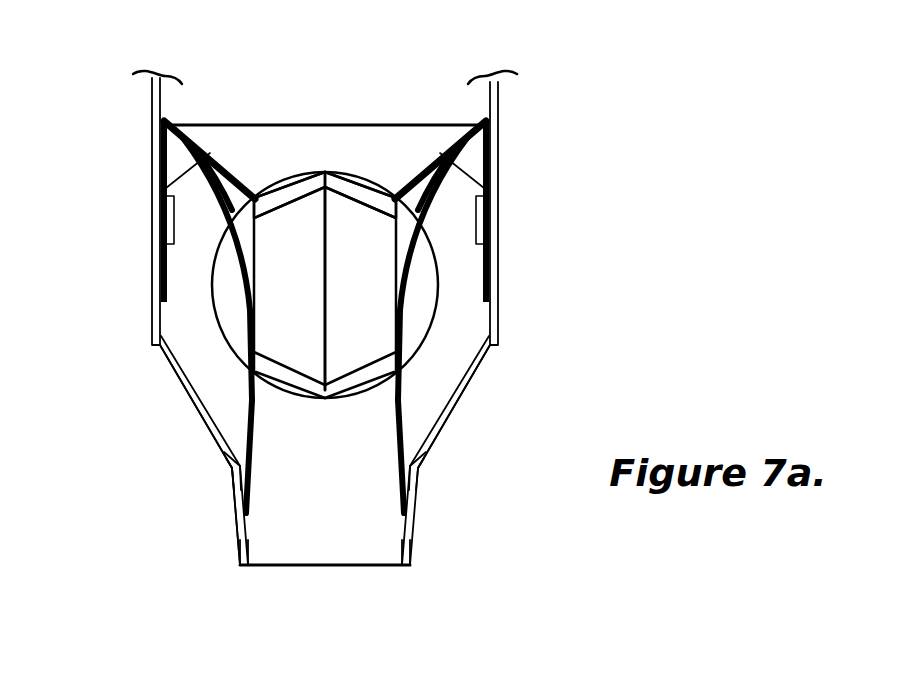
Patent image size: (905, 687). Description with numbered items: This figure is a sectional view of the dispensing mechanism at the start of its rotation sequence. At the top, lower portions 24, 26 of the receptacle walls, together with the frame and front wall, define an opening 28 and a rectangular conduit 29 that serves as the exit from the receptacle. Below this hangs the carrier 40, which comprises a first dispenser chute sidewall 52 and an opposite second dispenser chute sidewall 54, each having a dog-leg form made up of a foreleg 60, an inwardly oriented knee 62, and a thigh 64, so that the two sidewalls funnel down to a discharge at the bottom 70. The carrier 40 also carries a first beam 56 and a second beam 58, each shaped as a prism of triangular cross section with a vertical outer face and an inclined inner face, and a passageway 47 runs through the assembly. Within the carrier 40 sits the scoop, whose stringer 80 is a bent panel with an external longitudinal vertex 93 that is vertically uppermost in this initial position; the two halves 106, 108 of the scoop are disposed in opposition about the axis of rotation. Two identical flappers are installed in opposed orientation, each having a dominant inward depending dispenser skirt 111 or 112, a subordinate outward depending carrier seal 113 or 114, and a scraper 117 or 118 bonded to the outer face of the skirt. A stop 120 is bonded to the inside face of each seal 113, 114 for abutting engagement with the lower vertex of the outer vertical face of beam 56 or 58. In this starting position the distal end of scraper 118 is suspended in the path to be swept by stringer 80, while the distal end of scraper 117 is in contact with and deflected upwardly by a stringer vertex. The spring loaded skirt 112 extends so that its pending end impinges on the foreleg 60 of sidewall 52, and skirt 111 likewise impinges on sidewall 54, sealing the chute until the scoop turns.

The lower portion 24 is at (501, 103).
The lower portion 26 is at (150, 100).
The opening 28 is at (238, 101).
The rectangular conduit 29 is at (325, 88).
The carrier 40 is at (235, 530).
The passageway 47 is at (400, 96).
The first dispenser chute sidewall 52 is at (427, 442).
The second dispenser chute sidewall 54 is at (211, 442).
The first beam 56 is at (481, 158).
The second beam 58 is at (172, 157).
The foreleg 60 is at (236, 552).
The knee 62 is at (228, 474).
The thigh 64 is at (193, 407).
The bottom bar 70 is at (341, 589).
The stringer 80 is at (346, 190).
The vertex 93 is at (322, 166).
The left prism half 106 is at (286, 270).
The right prism half 108 is at (359, 271).
The dispenser skirt 111 is at (248, 400).
The dispenser skirt 112 is at (402, 400).
The carrier seal 113 is at (168, 291).
The carrier seal 114 is at (482, 291).
The scraper 117 is at (214, 152).
The scraper 118 is at (436, 158).
The stop 120 is at (176, 219).